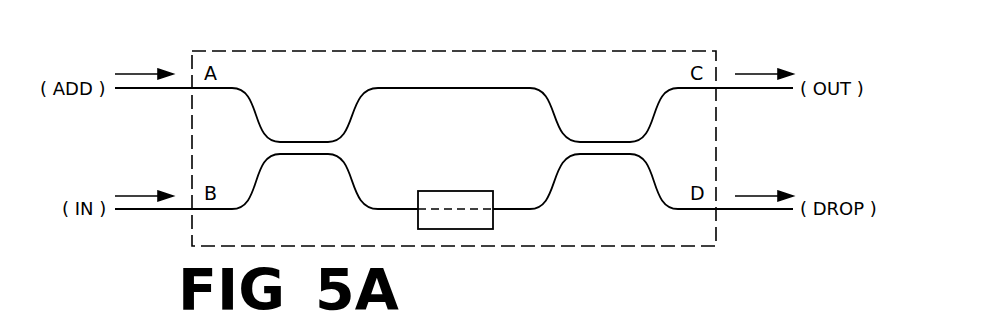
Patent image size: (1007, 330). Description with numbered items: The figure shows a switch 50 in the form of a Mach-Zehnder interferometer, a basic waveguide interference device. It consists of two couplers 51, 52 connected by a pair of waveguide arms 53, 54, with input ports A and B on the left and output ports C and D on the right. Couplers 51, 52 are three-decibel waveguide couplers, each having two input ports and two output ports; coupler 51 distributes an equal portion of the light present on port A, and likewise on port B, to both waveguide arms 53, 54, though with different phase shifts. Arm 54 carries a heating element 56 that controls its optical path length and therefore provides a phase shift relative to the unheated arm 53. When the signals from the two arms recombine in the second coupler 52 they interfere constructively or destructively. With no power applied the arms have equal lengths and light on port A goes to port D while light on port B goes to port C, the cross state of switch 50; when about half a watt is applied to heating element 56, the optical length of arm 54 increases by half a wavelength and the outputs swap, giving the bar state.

The switch 50 is at (190, 46).
The coupler 51 is at (313, 142).
The coupler 52 is at (593, 143).
The waveguide arm 53 is at (350, 115).
The waveguide arm 54 is at (350, 177).
The heating element 56 is at (455, 191).